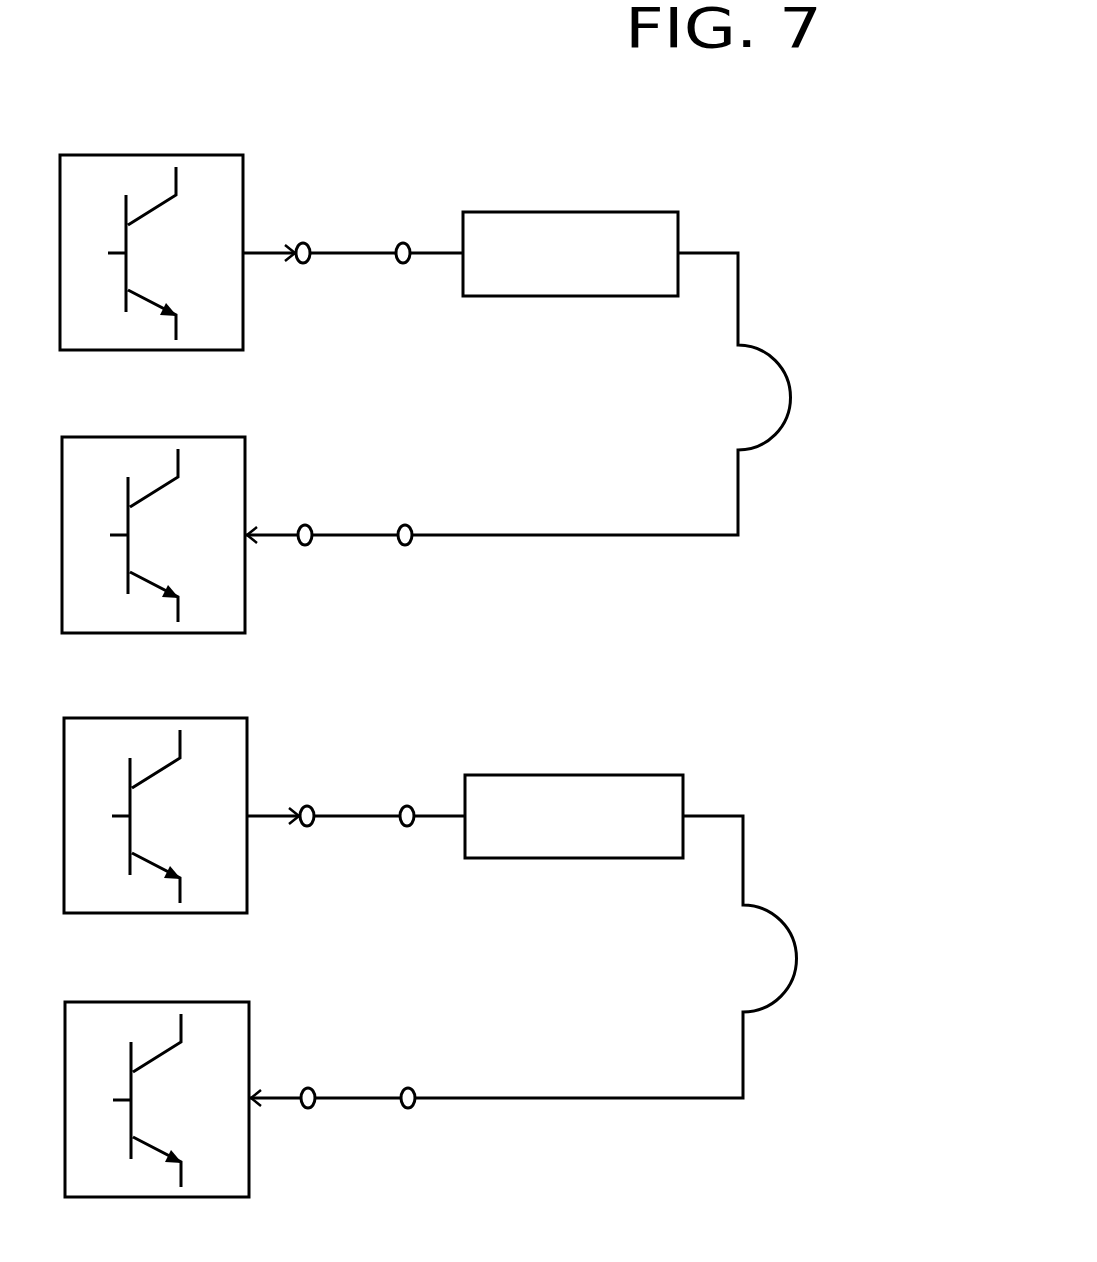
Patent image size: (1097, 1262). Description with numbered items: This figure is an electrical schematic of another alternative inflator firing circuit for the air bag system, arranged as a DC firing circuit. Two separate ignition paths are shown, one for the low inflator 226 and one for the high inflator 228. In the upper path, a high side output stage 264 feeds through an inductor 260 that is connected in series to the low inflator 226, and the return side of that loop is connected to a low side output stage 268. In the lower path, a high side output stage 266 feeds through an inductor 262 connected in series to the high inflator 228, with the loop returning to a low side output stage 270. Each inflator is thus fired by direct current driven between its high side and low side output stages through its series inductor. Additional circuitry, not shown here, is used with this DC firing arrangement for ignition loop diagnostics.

The high side output stage 264 is at (160, 155).
The low side output stage 268 is at (162, 437).
The high side output stage 266 is at (164, 718).
The low side output stage 270 is at (165, 1002).
The inductor 260 is at (580, 212).
The inductor 262 is at (582, 775).
The low inflator 226 is at (755, 347).
The high inflator 228 is at (775, 910).